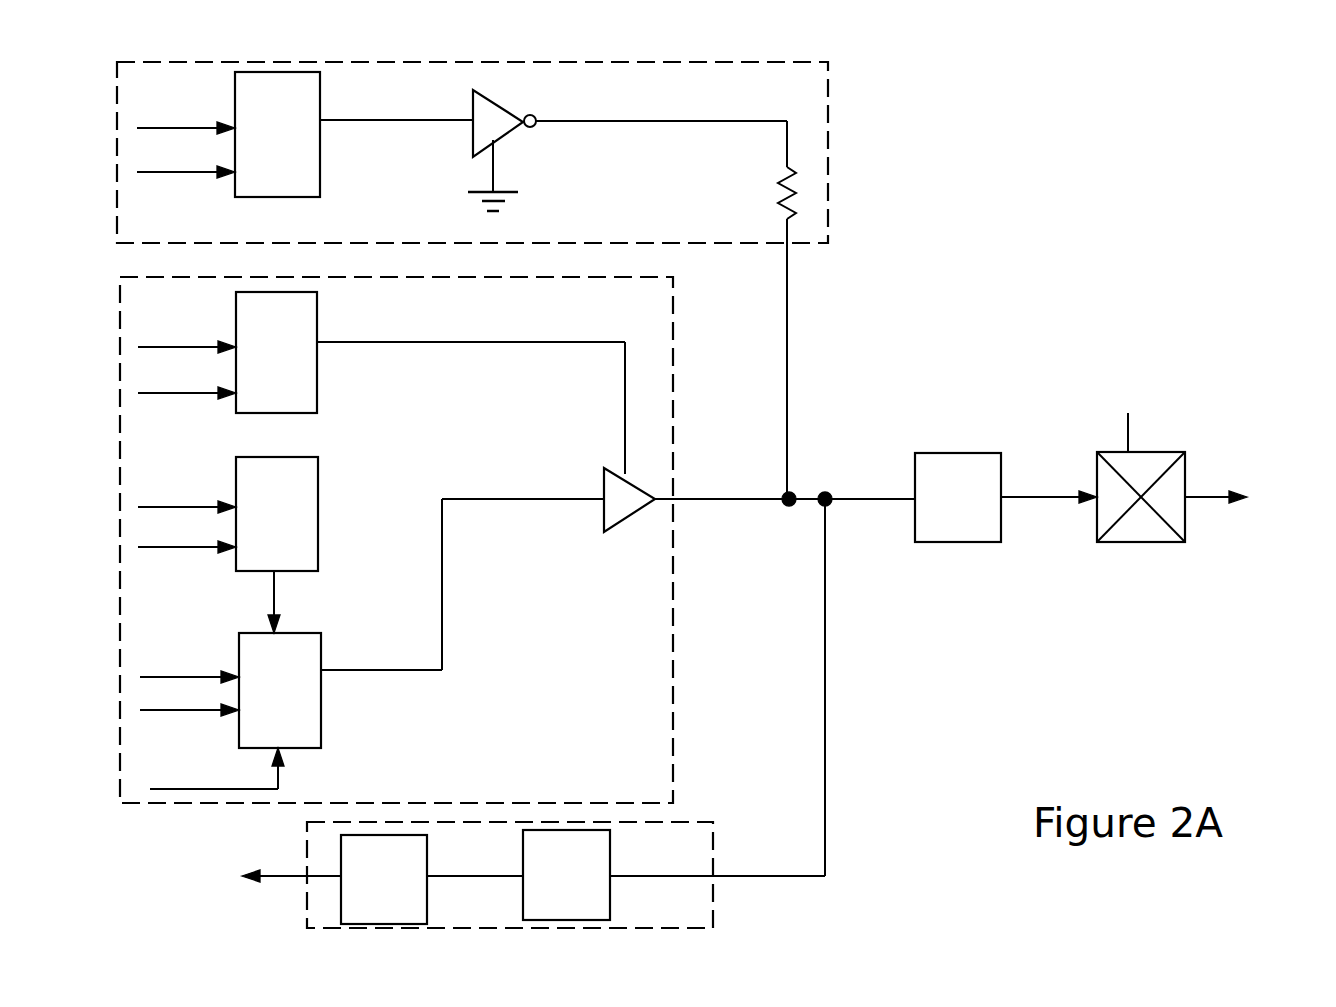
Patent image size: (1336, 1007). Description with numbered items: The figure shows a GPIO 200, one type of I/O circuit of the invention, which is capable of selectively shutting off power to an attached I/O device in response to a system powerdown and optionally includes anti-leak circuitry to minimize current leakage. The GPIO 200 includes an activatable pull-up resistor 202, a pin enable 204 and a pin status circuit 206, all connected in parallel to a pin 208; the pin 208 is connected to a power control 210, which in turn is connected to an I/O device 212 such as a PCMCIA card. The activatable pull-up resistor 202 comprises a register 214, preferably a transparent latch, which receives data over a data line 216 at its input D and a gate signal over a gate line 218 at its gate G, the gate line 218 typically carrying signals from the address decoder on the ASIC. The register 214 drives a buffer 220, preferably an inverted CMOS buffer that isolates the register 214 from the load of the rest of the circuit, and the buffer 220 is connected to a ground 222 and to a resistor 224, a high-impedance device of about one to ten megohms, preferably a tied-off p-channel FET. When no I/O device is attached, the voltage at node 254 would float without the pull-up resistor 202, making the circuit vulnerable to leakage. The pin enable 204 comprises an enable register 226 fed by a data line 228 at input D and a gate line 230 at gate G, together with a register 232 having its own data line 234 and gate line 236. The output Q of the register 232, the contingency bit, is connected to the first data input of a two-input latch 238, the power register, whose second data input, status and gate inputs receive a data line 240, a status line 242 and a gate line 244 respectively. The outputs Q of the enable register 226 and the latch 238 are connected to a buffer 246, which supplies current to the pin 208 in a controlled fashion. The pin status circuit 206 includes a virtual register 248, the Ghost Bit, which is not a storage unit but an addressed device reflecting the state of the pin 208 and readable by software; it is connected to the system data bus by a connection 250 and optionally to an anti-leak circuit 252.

The GPIO 200 is at (1172, 153).
The activatable pull-up resistor 202 is at (870, 155).
The pin enable 204 is at (690, 334).
The pin status circuit 206 is at (735, 816).
The pin 208 is at (947, 453).
The power control 210 is at (1125, 543).
The I/O device 212 is at (1302, 470).
The register 214 is at (320, 98).
The data line 216 is at (197, 125).
The gate line 218 is at (197, 175).
The buffer 220 is at (500, 103).
The ground 222 is at (515, 188).
The resistor 224 is at (782, 191).
The enable register 226 is at (317, 322).
The data line 228 is at (198, 342).
The gate line 230 is at (198, 393).
The register 232 is at (318, 492).
The data line 234 is at (198, 504).
The gate line 236 is at (197, 552).
The two-input latch 238 is at (321, 650).
The data line 240 is at (201, 675).
The status line 242 is at (201, 712).
The gate line 244 is at (278, 780).
The buffer 246 is at (640, 525).
The virtual register 248 is at (427, 862).
The connection 250 is at (283, 880).
The anti-leak circuit 252 is at (610, 858).
The node 254 is at (795, 490).